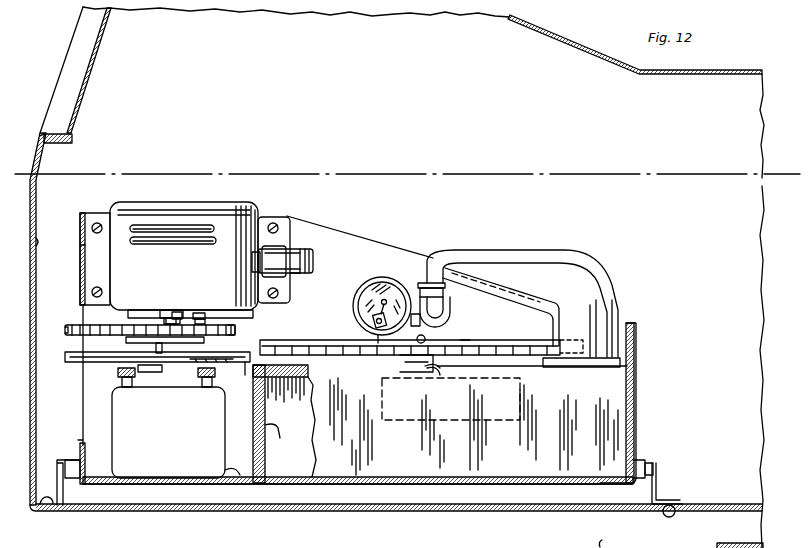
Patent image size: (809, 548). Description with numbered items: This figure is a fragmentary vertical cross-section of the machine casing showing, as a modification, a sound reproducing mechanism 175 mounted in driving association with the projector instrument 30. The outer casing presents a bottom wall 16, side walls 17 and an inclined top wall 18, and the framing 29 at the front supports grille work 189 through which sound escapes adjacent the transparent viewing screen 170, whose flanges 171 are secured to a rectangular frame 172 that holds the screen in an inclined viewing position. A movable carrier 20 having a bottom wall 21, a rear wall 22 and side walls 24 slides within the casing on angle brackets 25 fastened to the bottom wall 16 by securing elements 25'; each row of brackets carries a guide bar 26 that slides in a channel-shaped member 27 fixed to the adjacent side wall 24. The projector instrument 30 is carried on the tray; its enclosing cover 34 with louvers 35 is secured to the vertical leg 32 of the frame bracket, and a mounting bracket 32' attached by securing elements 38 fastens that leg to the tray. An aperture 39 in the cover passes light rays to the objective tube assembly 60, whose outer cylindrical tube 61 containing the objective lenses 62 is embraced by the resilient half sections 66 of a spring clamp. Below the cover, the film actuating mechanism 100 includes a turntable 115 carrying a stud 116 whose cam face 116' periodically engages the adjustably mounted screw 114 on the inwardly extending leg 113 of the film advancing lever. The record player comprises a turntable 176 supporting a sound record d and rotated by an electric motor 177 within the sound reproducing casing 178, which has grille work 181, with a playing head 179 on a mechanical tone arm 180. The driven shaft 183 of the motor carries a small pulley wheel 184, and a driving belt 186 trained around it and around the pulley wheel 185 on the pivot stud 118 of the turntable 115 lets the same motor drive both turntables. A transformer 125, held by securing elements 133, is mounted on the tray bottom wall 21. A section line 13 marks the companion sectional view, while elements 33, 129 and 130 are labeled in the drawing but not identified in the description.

The section line 13- 13 is at (17, 190).
The bottom wall 16 is at (478, 509).
The side walls 17 is at (388, 76).
The top wall 18 is at (580, 43).
The movable carrier 20 is at (638, 337).
The bottom wall 21 is at (222, 483).
The rear wall 22 is at (348, 232).
The side walls 24 is at (79, 241).
The angle brackets 25 is at (365, 482).
The securing elements 25' is at (694, 501).
The guide bar 26 is at (72, 470).
The channel-shaped member 27 is at (78, 447).
The framing 29 is at (38, 203).
The projector instrument 30 is at (186, 200).
The vertical leg 32 is at (246, 242).
The mounting bracket 32' is at (175, 329).
The gear 33 is at (128, 338).
The enclosing cover 34 is at (178, 276).
The louvers 35 is at (148, 226).
The securing elements 38 is at (97, 222).
The aperture 39 is at (250, 262).
The objective tube assembly 60 is at (302, 243).
The outer cylindrical tube 61 is at (300, 277).
The objective lenses 62 is at (314, 262).
The semi-circular half sections 66 is at (271, 246).
The film actuating mechanism 100 is at (239, 330).
The inwardly extending leg 113 is at (172, 318).
The adjustably mounted screw 114 is at (178, 312).
The turntable 115 is at (66, 330).
The stud 116 is at (210, 306).
The cam face 116' is at (209, 297).
The pivot stud 118 is at (176, 342).
The transformer 125 is at (176, 434).
The lower element 129 is at (603, 541).
The lower element 130 is at (717, 546).
The securing elements 133 is at (228, 470).
The transparent viewing screen 170 is at (97, 61).
The flanges 171 is at (74, 145).
The rectangular frame 172 is at (58, 137).
The sound reproducing mechanism 175 is at (615, 277).
The turntable 176 is at (503, 341).
The electric motor 177 is at (522, 389).
The sound reproducing casing 178 is at (605, 416).
The playing head 179 is at (386, 278).
The tone arm 180 is at (519, 259).
The grille work 181 is at (266, 437).
The driven shaft 183 is at (398, 368).
The pulley wheel 184 is at (441, 370).
The pulley wheel 185 is at (95, 370).
The driving belt 186 is at (247, 365).
The grille work 189 is at (38, 302).
The sound record d is at (463, 340).